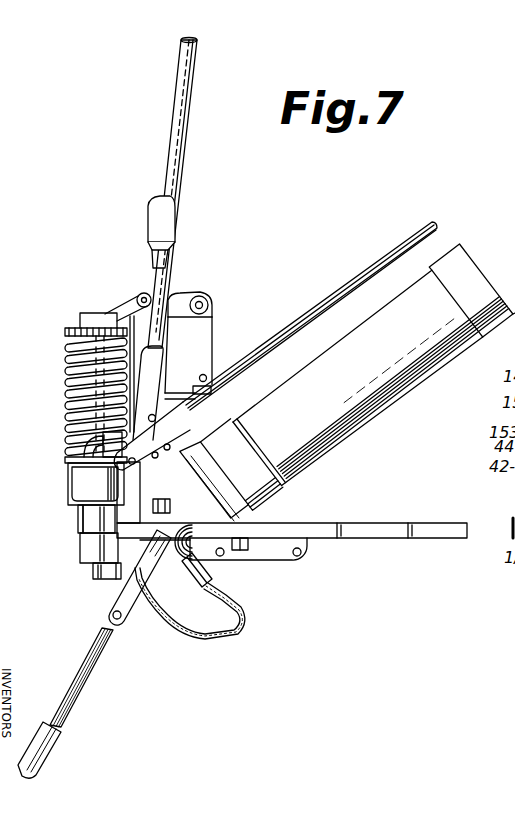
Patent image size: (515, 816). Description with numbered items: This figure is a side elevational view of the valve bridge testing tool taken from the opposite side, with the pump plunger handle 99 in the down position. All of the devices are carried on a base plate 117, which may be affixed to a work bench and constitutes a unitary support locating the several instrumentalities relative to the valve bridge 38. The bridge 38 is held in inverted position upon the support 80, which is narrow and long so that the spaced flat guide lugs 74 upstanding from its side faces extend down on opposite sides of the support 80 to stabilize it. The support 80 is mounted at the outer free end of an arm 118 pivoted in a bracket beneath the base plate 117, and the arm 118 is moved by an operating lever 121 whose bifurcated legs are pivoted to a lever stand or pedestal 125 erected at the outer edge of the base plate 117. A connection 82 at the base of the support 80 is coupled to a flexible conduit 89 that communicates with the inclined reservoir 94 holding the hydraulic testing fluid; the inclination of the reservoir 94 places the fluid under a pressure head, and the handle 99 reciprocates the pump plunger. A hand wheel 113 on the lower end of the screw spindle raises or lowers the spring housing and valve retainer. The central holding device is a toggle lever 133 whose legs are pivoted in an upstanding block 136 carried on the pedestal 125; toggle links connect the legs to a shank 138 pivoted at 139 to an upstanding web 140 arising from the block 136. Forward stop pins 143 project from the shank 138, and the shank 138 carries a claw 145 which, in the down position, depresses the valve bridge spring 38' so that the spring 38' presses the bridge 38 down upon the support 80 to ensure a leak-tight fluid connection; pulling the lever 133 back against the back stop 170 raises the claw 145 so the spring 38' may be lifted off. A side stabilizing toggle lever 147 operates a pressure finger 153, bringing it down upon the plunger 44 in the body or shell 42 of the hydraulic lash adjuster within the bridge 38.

The toggle lever 133 is at (182, 83).
The side stabilizing toggle lever 147 is at (162, 218).
The forward stop pin 143 is at (140, 296).
The claw 145 is at (95, 320).
The valve bridge spring 38' is at (74, 392).
The pressure finger 153 is at (96, 442).
The plunger 44 is at (66, 459).
The body or shell 42 is at (70, 467).
The valve bridge 38 is at (70, 491).
The guide lugs 74 is at (78, 520).
The support 80 is at (94, 519).
The arm 118 is at (94, 553).
The connection 82 is at (104, 579).
The upstanding block 136 is at (205, 333).
The shank 138 is at (174, 299).
The pivot 139 is at (206, 302).
The upstanding web 140 is at (211, 312).
The back stop 170 is at (208, 374).
The lever stand or pedestal 125 is at (172, 398).
The handle 99 is at (389, 252).
The inclined reservoir 94 is at (418, 370).
The base plate 117 is at (423, 530).
The hand wheel 113 is at (243, 558).
The flexible conduit 89 is at (210, 628).
The operating lever 121 is at (66, 712).